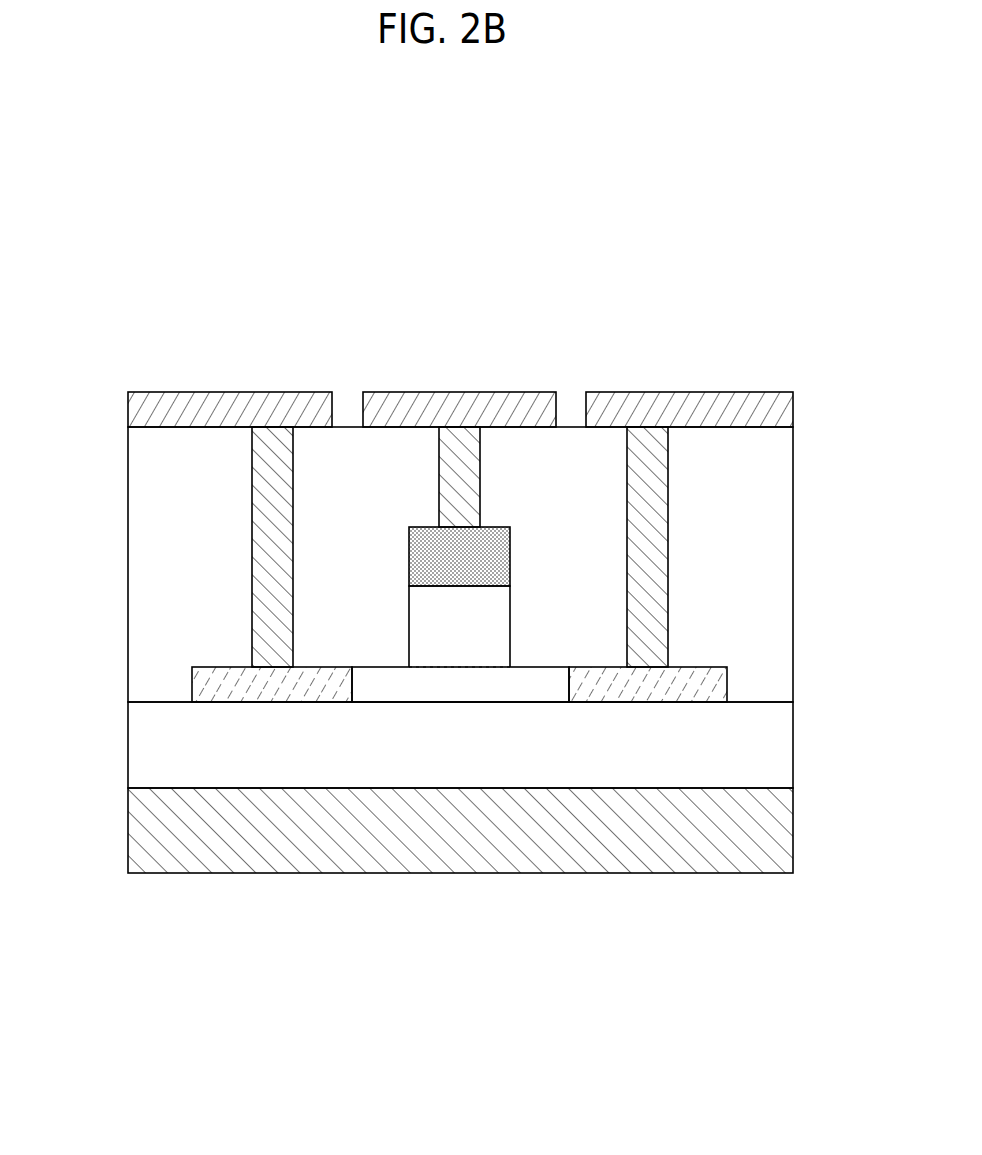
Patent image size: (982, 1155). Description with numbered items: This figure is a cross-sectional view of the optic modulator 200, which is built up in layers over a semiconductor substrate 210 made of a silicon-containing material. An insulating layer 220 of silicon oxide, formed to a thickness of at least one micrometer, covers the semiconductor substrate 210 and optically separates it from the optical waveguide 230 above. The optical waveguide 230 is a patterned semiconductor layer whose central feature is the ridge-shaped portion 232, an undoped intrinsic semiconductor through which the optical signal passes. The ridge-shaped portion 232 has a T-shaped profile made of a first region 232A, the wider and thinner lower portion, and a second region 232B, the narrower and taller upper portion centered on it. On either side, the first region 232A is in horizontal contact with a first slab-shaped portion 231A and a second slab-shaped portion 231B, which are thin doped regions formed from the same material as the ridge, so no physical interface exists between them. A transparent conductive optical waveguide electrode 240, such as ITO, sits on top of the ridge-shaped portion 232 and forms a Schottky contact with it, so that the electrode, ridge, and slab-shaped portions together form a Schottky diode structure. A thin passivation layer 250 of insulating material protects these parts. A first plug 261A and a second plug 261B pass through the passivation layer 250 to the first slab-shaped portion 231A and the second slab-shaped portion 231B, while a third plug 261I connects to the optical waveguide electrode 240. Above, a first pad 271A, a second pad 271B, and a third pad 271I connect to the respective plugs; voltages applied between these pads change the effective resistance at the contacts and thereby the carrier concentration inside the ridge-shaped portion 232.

The optic modulator 200 is at (746, 331).
The semiconductor substrate 210 is at (775, 828).
The insulating layer 220 is at (772, 745).
The optical waveguide 230 is at (517, 756).
The first slab-shaped portion 231A is at (642, 685).
The second slab-shaped portion 231B is at (275, 684).
The ridge-shaped portion 232 is at (460, 786).
The first region 232A is at (390, 683).
The second region 232B is at (458, 618).
The optical waveguide electrode 240 is at (487, 560).
The passivation layer 250 is at (772, 506).
The first plug 261A is at (645, 467).
The second plug 261B is at (273, 528).
The third plug 261I is at (458, 476).
The first pad 271A is at (778, 407).
The second pad 271B is at (146, 404).
The third pad 271I is at (457, 407).